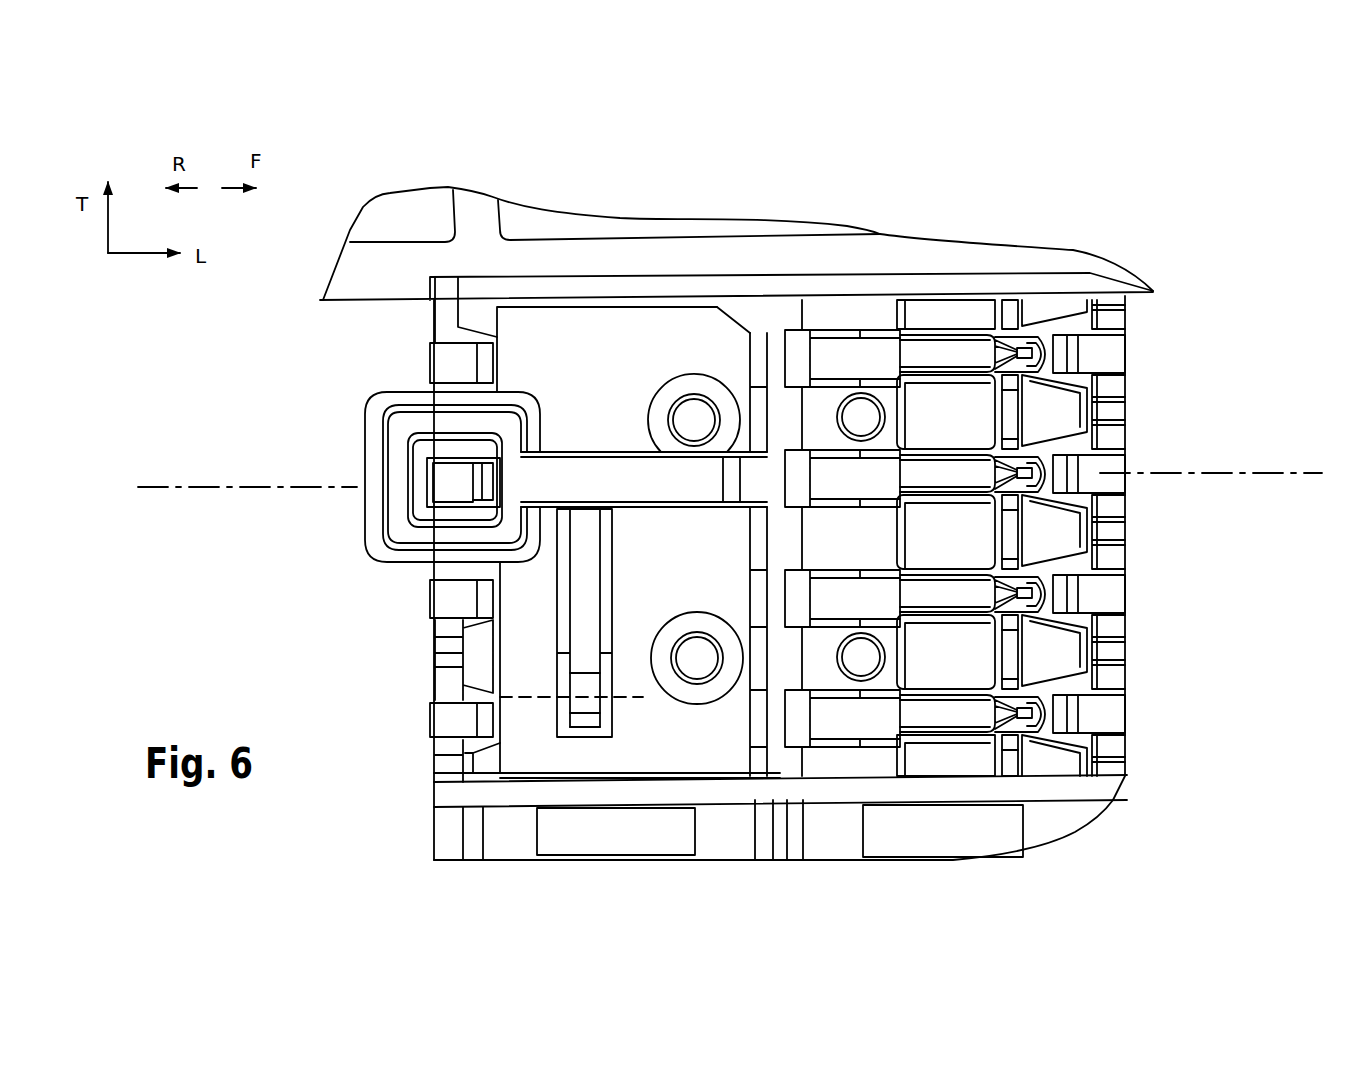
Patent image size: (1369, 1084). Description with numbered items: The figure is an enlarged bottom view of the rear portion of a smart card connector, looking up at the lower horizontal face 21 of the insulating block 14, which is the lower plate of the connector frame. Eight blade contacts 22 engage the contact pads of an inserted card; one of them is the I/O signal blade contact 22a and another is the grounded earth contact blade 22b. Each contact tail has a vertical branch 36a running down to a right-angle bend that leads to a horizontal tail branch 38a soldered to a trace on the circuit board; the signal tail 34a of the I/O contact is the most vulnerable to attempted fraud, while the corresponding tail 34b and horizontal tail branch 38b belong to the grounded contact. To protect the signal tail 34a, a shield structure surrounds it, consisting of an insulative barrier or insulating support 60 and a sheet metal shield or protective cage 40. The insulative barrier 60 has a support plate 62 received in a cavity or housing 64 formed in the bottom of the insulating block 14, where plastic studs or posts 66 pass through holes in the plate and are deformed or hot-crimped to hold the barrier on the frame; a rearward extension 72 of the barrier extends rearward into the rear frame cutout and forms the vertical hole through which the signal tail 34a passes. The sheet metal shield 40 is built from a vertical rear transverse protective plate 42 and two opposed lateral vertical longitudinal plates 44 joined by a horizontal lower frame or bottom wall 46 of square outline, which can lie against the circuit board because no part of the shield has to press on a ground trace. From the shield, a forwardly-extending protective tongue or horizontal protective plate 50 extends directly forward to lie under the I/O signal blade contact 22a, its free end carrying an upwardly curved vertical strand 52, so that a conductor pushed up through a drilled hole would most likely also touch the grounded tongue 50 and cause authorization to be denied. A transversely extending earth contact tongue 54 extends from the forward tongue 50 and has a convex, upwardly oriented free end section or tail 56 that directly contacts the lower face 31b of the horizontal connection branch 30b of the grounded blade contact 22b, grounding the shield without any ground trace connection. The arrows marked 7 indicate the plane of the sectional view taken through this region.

The insulating block 14 is at (783, 526).
The lower horizontal face 21 is at (783, 657).
The blade contacts 22 is at (452, 357).
The I/O signal blade contact 22a is at (777, 470).
The grounded blade contact 22b is at (425, 732).
The horizontal connection branch 30b is at (611, 741).
The lower face 31b is at (613, 713).
The signal tail 34a is at (462, 468).
The tail 34b is at (455, 718).
The vertical branch 36a is at (495, 480).
The horizontal tail branch 38a is at (426, 490).
The horizontal tail branch 38b is at (470, 727).
The sheet metal shield 40 is at (417, 543).
The rear transverse protective plate 42 is at (383, 463).
The lateral longitudinal plates 44 is at (420, 410).
The bottom wall 46 is at (442, 486).
The forwardly-extending protective tongue 50 is at (593, 478).
The vertical strand 52 is at (833, 472).
The transverse tongue 54 is at (583, 597).
The free end section 56 is at (587, 718).
The insulative barrier 60 is at (587, 343).
The support plate 62 is at (737, 318).
The cavity 64 is at (697, 742).
The posts 66 is at (689, 418).
The rearward extension 72 is at (383, 428).
The section line 7- 7 is at (152, 489).